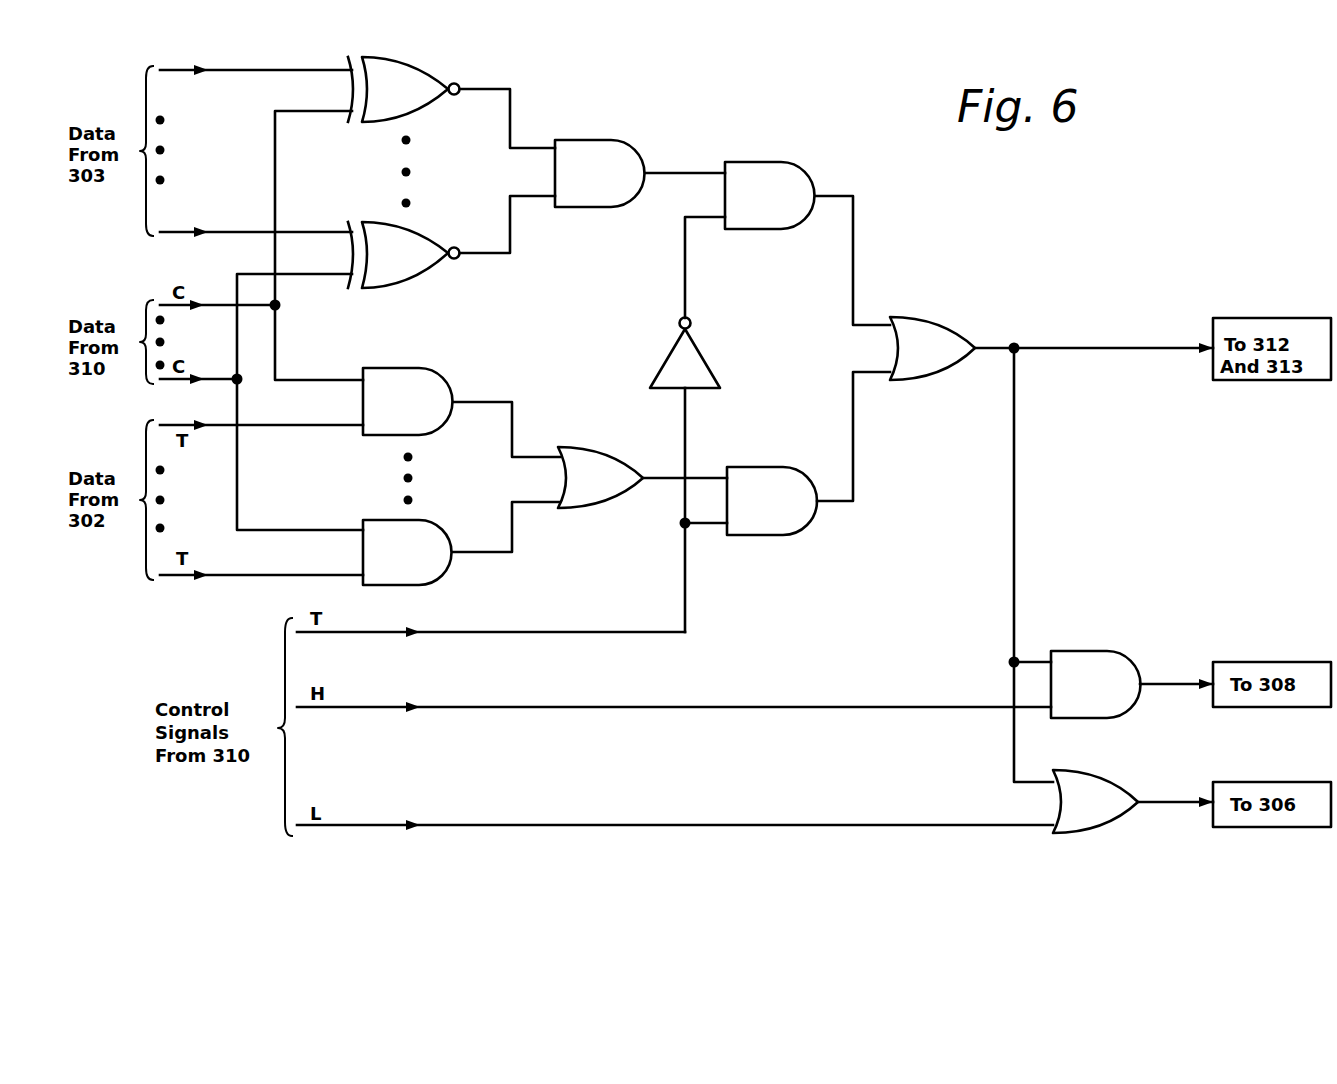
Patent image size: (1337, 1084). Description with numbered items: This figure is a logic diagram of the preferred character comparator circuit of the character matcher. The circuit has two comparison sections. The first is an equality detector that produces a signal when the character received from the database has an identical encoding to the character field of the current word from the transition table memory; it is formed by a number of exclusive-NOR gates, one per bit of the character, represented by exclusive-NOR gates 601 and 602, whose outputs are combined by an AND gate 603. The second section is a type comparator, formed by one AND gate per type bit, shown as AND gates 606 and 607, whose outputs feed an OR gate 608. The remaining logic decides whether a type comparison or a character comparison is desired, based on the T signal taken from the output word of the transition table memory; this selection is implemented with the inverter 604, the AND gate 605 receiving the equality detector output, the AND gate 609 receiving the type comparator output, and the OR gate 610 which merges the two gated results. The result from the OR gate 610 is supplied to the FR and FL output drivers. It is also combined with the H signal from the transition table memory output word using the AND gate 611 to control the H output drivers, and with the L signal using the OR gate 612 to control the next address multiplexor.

The exclusive-NOR gate 601 is at (400, 104).
The exclusive-NOR gate 602 is at (400, 268).
The AND gate 603 is at (591, 188).
The inverter gate 604 is at (707, 358).
The AND gate 605 is at (762, 210).
The AND gate 606 is at (398, 416).
The AND gate 607 is at (398, 568).
The OR gate 608 is at (598, 493).
The AND gate 609 is at (763, 516).
The OR gate 610 is at (928, 363).
The AND gate 611 is at (1088, 699).
The OR gate 612 is at (1092, 817).